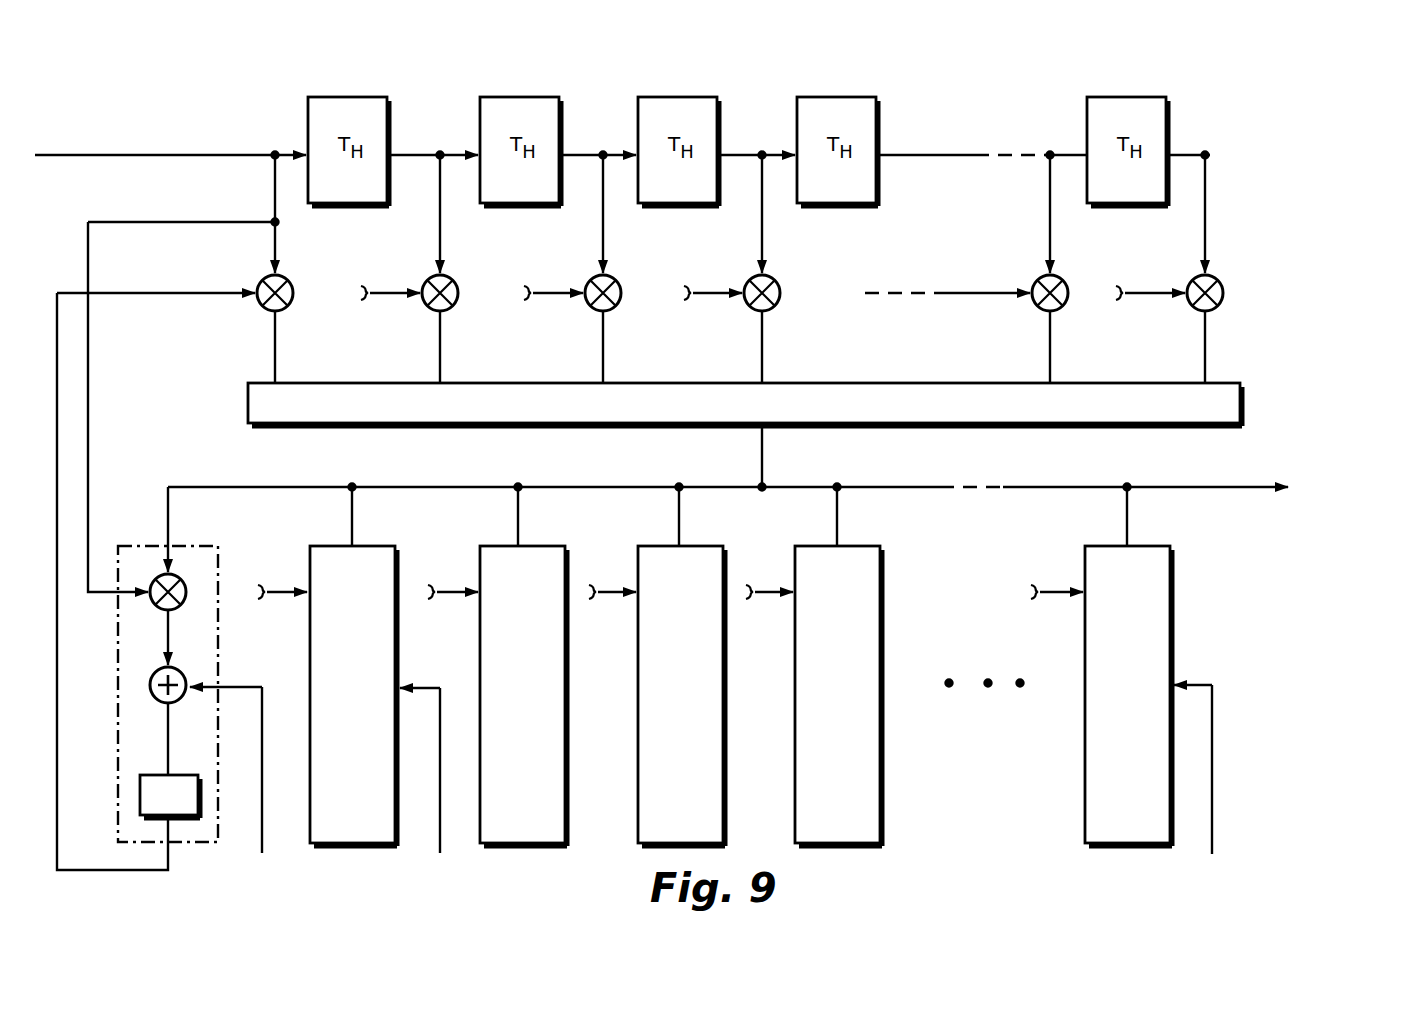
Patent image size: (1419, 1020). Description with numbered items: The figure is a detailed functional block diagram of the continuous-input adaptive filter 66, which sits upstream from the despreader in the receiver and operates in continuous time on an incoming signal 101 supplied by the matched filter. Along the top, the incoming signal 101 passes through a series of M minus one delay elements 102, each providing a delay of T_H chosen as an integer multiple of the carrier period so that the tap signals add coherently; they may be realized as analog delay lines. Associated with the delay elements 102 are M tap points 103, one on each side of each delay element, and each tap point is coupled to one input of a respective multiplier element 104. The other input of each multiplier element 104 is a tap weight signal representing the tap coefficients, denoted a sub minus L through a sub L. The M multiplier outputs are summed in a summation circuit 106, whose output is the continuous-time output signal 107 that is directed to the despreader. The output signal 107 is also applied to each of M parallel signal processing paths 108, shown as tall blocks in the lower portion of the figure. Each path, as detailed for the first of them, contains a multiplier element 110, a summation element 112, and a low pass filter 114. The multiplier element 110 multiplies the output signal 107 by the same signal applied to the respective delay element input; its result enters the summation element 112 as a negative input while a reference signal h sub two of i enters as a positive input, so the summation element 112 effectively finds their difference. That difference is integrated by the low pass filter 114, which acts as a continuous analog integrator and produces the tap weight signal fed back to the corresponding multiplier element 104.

The continuous-input adaptive filter 66 is at (1234, 72).
The incoming signal 101 is at (170, 165).
The delay elements 102 is at (345, 97).
The tap points 103 is at (275, 153).
The multiplier elements 104 is at (288, 278).
The summation circuit 106 is at (875, 383).
The output signal 107 is at (778, 523).
The parallel signal processing paths 108 is at (222, 677).
The multiplier element 110 is at (206, 565).
The summation element 112 is at (198, 655).
The low pass filter 114 is at (206, 748).